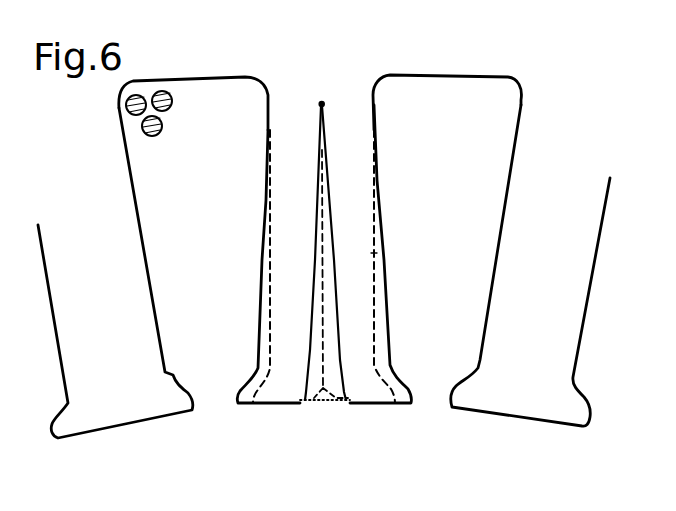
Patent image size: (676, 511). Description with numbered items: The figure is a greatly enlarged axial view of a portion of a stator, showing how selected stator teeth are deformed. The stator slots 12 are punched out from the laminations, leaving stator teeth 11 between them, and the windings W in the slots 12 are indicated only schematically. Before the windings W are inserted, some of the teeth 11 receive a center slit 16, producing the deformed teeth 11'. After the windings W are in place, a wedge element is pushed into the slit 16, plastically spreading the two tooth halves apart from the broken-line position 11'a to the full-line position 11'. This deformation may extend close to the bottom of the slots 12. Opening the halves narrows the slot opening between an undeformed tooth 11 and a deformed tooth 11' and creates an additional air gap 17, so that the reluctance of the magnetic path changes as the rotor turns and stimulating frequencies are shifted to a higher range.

The stator teeth 11 is at (324, 287).
The deformed teeth 11' is at (324, 286).
The tooth portion in original position 11'a is at (419, 237).
The stator slots 12 is at (221, 177).
The center slit 16 is at (318, 236).
The additional air gap 17 is at (313, 352).
The windings W is at (163, 119).